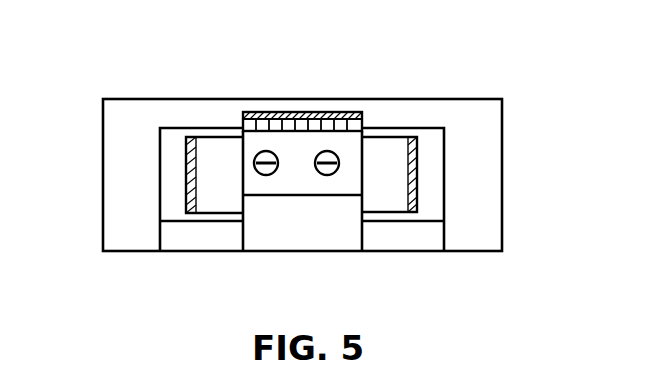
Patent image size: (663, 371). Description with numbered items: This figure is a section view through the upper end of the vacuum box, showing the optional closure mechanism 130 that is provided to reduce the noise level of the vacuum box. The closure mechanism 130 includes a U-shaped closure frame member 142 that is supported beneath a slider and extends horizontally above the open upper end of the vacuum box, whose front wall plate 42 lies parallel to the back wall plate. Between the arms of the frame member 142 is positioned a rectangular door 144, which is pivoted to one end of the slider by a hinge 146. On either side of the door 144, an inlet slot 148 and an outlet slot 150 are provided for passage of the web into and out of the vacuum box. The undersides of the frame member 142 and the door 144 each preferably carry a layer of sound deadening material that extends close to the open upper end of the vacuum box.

The closure mechanism 130 is at (207, 95).
The U-shaped closure frame member 142 is at (463, 148).
The rectangular door 144 is at (270, 233).
The hinge 146 is at (293, 118).
The inlet slot 148 is at (175, 268).
The outlet slot 150 is at (370, 265).
The front wall plate 42 is at (422, 228).